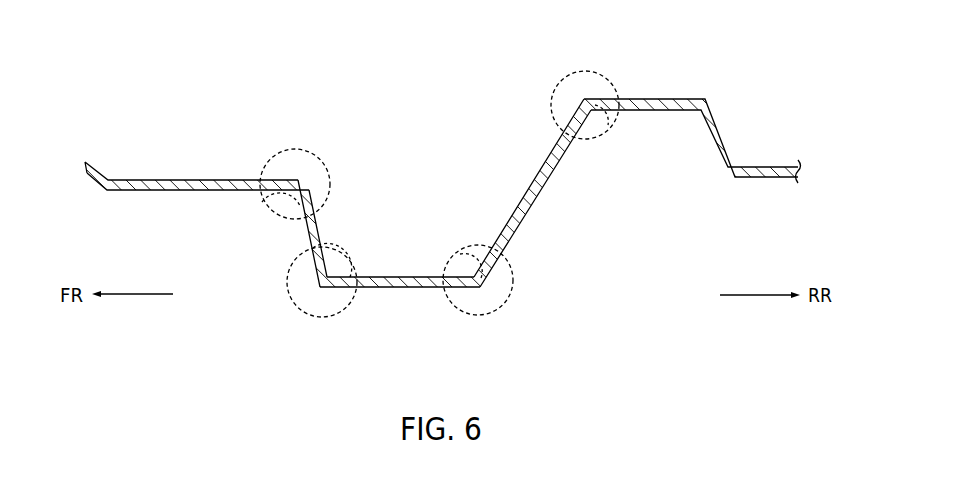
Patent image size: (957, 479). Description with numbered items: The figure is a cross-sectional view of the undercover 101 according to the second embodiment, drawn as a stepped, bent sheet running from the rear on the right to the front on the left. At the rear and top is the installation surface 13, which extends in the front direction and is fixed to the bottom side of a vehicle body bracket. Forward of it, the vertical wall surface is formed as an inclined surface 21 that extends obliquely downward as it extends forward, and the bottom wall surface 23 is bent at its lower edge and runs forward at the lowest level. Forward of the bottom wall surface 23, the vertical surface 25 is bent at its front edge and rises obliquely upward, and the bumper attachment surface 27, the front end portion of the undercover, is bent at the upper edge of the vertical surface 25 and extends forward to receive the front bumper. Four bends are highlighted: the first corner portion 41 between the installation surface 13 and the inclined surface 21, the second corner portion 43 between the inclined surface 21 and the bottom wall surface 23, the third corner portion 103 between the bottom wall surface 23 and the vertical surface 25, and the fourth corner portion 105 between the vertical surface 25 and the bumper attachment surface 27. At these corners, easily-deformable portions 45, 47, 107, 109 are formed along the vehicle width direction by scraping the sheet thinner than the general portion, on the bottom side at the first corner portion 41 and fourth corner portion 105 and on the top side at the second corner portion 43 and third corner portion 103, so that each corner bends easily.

The undercover 101 is at (120, 165).
The bumper attachment surface 27 is at (170, 180).
The vertical surface 25 is at (305, 237).
The bottom wall surface 23 is at (398, 289).
The inclined surface 21 is at (540, 192).
The installation surface 13 is at (658, 99).
The fourth corner portion 105 is at (300, 150).
The third corner portion 103 is at (322, 318).
The second corner portion 43 is at (518, 286).
The first corner portion 41 is at (550, 100).
The easily-deformable portion 109 is at (288, 200).
The easily-deformable portion 107 is at (352, 262).
The easily-deformable portion 47 is at (458, 258).
The easily-deformable portion 45 is at (608, 125).